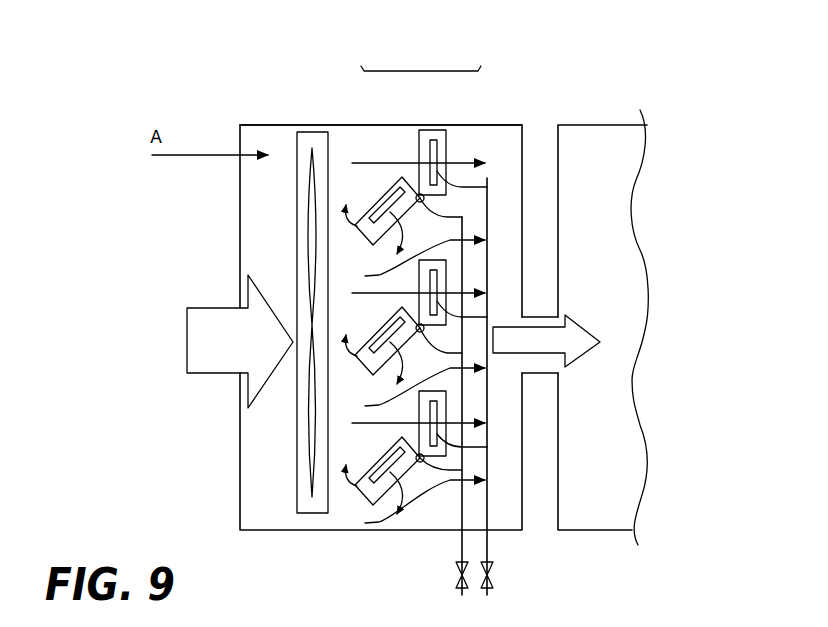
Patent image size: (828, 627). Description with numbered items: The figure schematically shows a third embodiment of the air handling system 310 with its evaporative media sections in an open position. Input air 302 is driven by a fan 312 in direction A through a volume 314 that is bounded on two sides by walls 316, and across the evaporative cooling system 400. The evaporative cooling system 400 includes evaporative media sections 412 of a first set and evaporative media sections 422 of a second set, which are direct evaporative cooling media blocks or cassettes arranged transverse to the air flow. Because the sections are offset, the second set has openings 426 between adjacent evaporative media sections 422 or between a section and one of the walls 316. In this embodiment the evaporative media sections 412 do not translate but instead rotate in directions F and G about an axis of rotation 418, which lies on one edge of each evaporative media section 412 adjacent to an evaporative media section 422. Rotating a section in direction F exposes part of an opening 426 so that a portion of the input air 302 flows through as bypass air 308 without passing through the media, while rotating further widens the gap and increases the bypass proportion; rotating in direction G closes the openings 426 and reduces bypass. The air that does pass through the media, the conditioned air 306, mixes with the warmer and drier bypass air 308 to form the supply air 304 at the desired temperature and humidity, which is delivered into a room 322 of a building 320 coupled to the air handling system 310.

The input air 302 is at (206, 373).
The supply air 304 is at (580, 340).
The conditioned air 306 is at (356, 163).
The bypass air 308 is at (365, 276).
The air handling system 310 is at (280, 78).
The fan 312 is at (313, 513).
The volume 314 is at (343, 130).
The walls 316 is at (496, 532).
The building 320 is at (580, 130).
The room 322 is at (581, 498).
The evaporative cooling system 400 is at (421, 68).
The evaporative media sections 412 is at (355, 230).
The axis of rotation 418 is at (470, 240).
The evaporative media sections 422 is at (442, 145).
The openings 426 is at (447, 217).